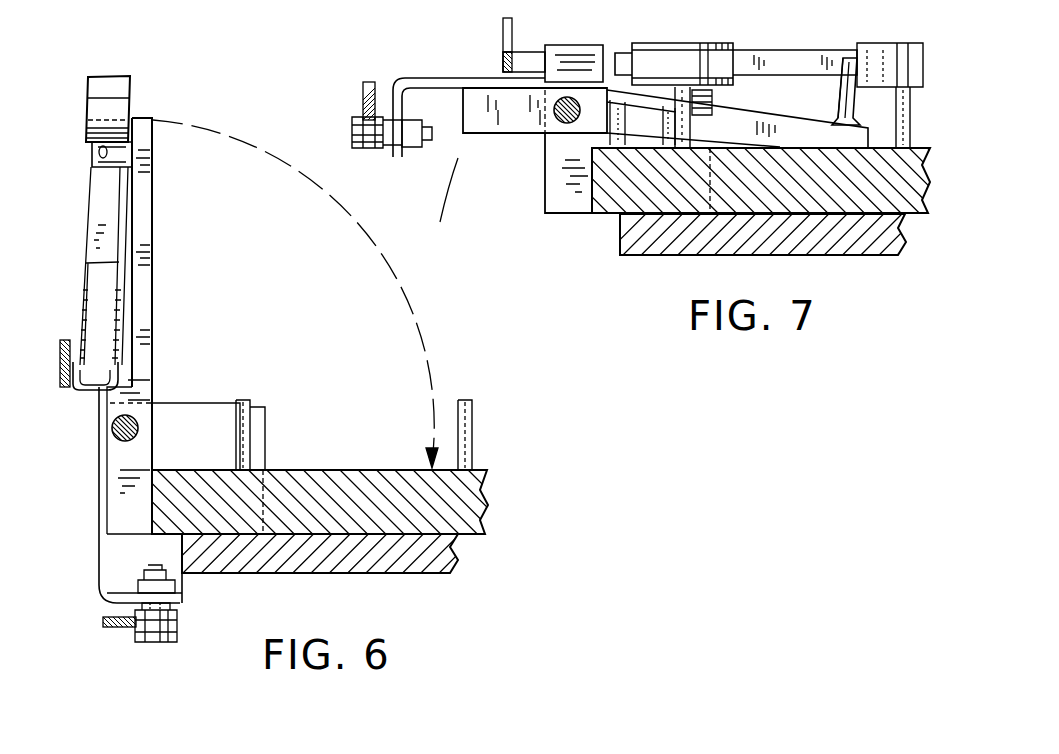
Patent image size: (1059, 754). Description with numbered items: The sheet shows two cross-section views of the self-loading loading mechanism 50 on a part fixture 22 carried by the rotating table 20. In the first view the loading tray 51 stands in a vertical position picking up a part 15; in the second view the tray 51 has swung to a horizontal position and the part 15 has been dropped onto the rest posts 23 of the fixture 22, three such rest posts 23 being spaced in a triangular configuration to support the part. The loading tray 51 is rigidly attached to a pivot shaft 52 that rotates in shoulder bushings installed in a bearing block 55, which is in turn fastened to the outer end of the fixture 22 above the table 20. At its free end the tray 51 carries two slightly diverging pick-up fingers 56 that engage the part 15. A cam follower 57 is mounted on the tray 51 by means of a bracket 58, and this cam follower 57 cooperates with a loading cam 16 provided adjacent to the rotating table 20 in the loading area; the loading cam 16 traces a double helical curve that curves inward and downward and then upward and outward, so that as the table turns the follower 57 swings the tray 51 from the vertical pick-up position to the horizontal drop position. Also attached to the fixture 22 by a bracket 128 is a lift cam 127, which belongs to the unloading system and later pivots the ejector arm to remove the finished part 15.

In FIG. 6, the part 15 is at (92, 105).
In FIG. 7, the part 15 is at (770, 55).
In FIG. 6, the loading cam 16 is at (103, 624).
In FIG. 7, the loading cam 16 is at (368, 82).
In FIG. 6, the rotating table 20 is at (445, 572).
In FIG. 7, the rotating table 20 is at (643, 245).
In FIG. 6, the fixture 22 is at (481, 512).
In FIG. 7, the fixture 22 is at (612, 190).
In FIG. 6, the rest post 23 is at (250, 398).
In FIG. 7, the rest post 23 is at (682, 100).
In FIG. 6, the loading mechanism 50 is at (100, 434).
In FIG. 7, the loading mechanism 50 is at (460, 152).
In FIG. 6, the loading tray 51 is at (145, 216).
In FIG. 7, the loading tray 51 is at (470, 104).
In FIG. 6, the pivot shaft 52 is at (112, 428).
In FIG. 7, the pivot shaft 52 is at (568, 97).
In FIG. 6, the bearing block 55 is at (196, 418).
In FIG. 7, the bearing block 55 is at (568, 178).
In FIG. 6, the pick-up finger 56 is at (100, 153).
In FIG. 7, the pick-up finger 56 is at (840, 96).
In FIG. 6, the cam follower 57 is at (178, 627).
In FIG. 7, the cam follower 57 is at (366, 150).
In FIG. 6, the bracket 58 is at (104, 566).
In FIG. 7, the bracket 58 is at (434, 82).
In FIG. 6, the lift cam 127 is at (62, 365).
In FIG. 7, the lift cam 127 is at (505, 60).
In FIG. 6, the bracket 128 is at (76, 388).
In FIG. 7, the bracket 128 is at (528, 60).